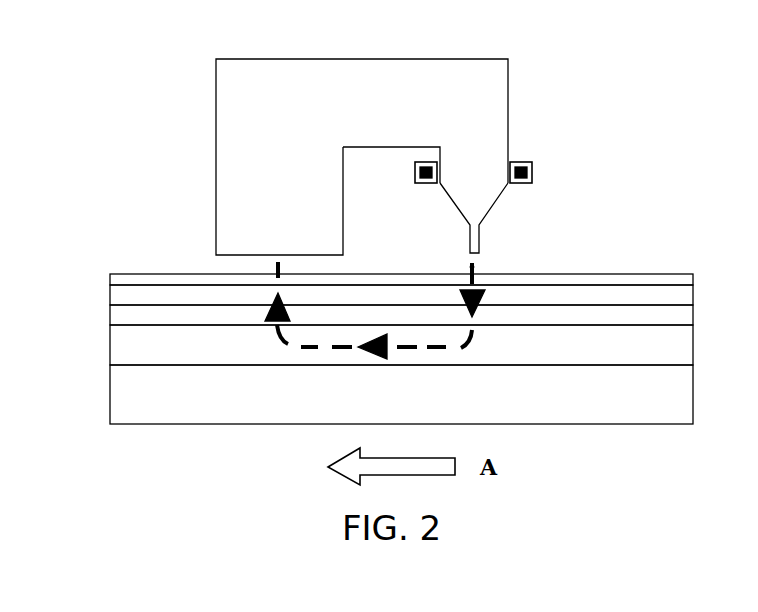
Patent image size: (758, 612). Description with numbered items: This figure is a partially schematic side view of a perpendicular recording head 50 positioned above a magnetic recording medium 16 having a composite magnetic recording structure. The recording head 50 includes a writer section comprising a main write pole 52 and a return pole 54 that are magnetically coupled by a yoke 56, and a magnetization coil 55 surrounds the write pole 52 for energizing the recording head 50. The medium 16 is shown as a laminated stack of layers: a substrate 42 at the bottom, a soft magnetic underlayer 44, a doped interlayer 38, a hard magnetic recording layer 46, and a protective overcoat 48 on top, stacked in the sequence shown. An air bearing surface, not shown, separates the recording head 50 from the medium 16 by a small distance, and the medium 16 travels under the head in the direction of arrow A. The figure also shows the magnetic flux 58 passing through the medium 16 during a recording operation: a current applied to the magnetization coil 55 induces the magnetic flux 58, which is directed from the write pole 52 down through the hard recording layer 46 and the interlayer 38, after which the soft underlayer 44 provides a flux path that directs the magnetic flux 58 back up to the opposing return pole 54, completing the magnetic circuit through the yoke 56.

The magnetic recording medium 16 is at (386, 334).
The doped interlayer 38 is at (688, 317).
The substrate 42 is at (692, 402).
The soft magnetic underlayer 44 is at (692, 347).
The hard magnetic recording layer 46 is at (693, 293).
The protective overcoat 48 is at (693, 273).
The perpendicular recording head 50 is at (354, 165).
The main write pole 52 is at (477, 227).
The return pole 54 is at (232, 220).
The magnetization coil 55 is at (532, 168).
The yoke 56 is at (490, 79).
The magnetic flux 58 is at (477, 265).